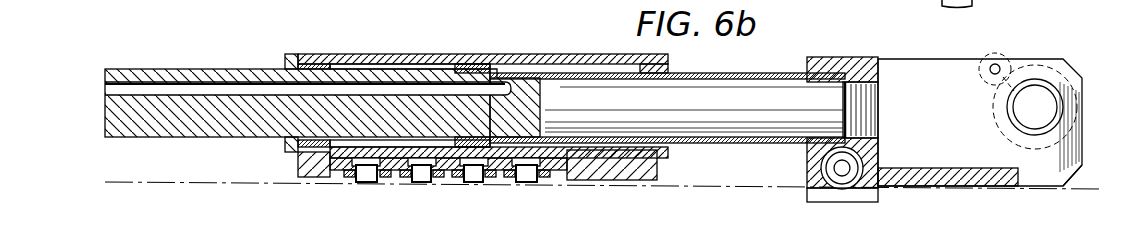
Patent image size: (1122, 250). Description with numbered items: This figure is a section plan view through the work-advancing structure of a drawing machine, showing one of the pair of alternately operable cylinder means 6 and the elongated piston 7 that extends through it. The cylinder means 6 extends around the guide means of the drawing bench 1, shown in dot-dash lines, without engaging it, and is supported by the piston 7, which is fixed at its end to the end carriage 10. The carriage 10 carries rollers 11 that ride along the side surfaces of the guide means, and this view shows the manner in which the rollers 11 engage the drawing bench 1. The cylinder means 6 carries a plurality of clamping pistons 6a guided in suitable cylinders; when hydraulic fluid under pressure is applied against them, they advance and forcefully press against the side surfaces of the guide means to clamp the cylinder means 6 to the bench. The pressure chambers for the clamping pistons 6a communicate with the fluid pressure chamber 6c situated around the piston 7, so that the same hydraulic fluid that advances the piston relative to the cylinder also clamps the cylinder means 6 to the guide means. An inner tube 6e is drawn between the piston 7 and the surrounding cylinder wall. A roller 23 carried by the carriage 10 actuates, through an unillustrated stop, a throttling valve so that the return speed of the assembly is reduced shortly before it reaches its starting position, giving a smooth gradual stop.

The drawing bench 1 is at (1080, 207).
The cylinder means 6 is at (343, 54).
The clamping pistons 6a is at (424, 181).
The fluid pressure chamber 6c is at (524, 55).
The inner tube 6e is at (418, 65).
The piston 7 is at (172, 124).
The end carriage 10 is at (923, 65).
The rollers 11 is at (826, 170).
The roller 23 is at (1013, 72).